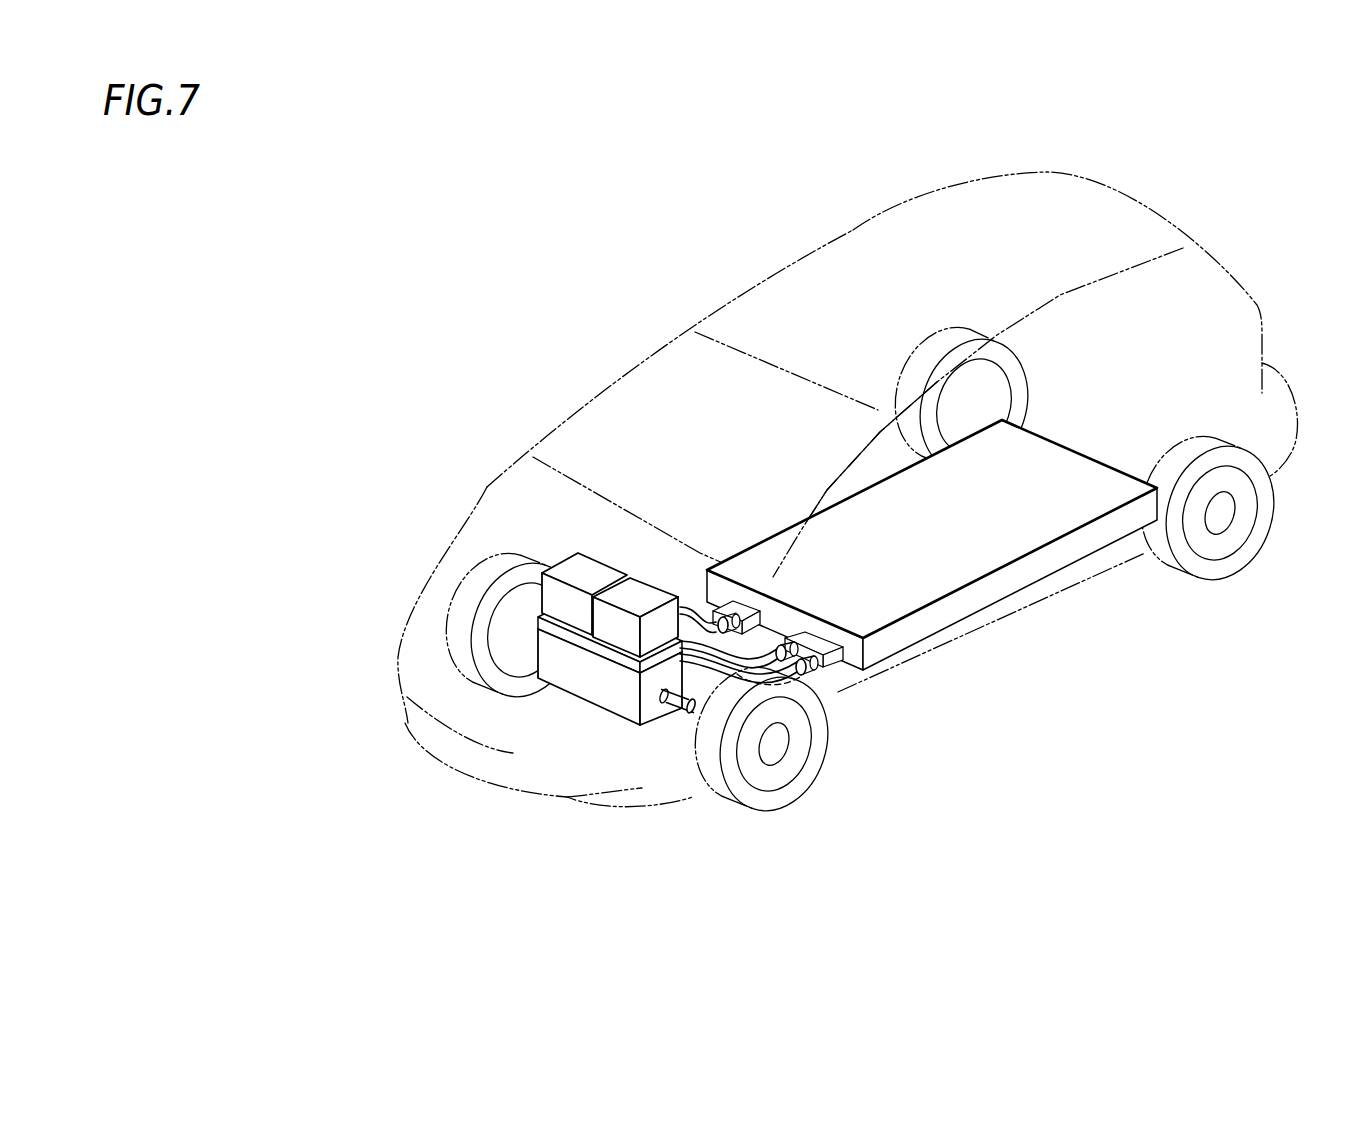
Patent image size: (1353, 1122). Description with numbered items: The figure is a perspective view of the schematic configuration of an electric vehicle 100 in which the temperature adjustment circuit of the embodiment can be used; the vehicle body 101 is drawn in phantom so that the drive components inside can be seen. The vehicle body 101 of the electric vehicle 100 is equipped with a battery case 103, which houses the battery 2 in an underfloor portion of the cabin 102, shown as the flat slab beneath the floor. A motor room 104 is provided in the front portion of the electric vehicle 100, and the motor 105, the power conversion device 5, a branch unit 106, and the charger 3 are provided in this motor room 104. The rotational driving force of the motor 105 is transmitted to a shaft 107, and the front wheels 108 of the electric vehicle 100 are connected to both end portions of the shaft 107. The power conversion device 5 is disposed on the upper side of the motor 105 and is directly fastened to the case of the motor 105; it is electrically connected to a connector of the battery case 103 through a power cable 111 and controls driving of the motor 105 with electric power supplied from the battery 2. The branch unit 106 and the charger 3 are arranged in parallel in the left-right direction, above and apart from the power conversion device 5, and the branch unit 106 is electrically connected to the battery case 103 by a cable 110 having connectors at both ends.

The battery 2 is at (1022, 513).
The charger 3 is at (589, 565).
The power conversion device 5 is at (611, 658).
The electric vehicle 100 is at (735, 268).
The vehicle body 101 is at (855, 226).
The cabin 102 is at (711, 416).
The battery case 103 is at (1010, 602).
The motor room 104 is at (518, 518).
The motor 105 is at (568, 677).
The branch unit 106 is at (643, 587).
The shaft 107 is at (681, 714).
The front wheels 108 is at (448, 597).
The cable 110 is at (692, 605).
The power cable 111 is at (805, 683).